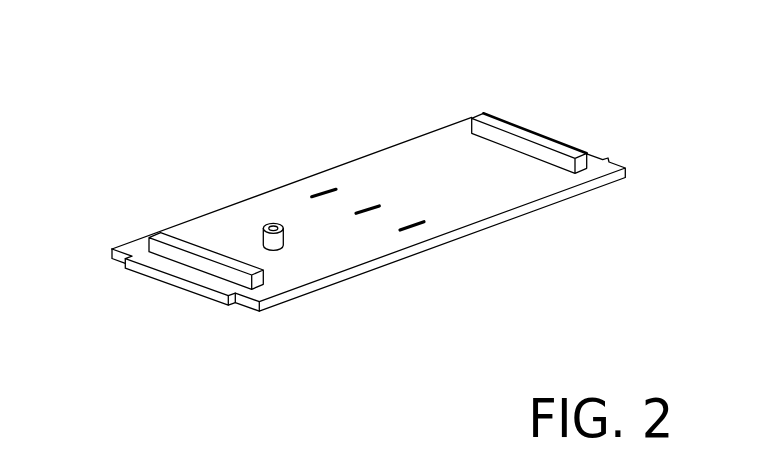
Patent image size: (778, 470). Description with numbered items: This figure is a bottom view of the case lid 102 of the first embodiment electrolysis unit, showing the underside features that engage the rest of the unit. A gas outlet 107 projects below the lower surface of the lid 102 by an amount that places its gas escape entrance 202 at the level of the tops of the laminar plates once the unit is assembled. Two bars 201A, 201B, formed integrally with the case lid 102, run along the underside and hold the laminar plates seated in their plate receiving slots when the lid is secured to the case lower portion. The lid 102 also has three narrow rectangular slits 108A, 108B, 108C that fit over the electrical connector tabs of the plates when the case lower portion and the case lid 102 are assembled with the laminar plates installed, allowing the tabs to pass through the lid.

The case lid 102 is at (473, 203).
The gas outlet 107 is at (277, 240).
The narrow rectangular slit 108A is at (323, 175).
The narrow rectangular slit 108B is at (366, 192).
The narrow rectangular slit 108C is at (408, 208).
The bar 201A is at (530, 133).
The bar 201B is at (198, 262).
The gas escape entrance 202 is at (272, 207).